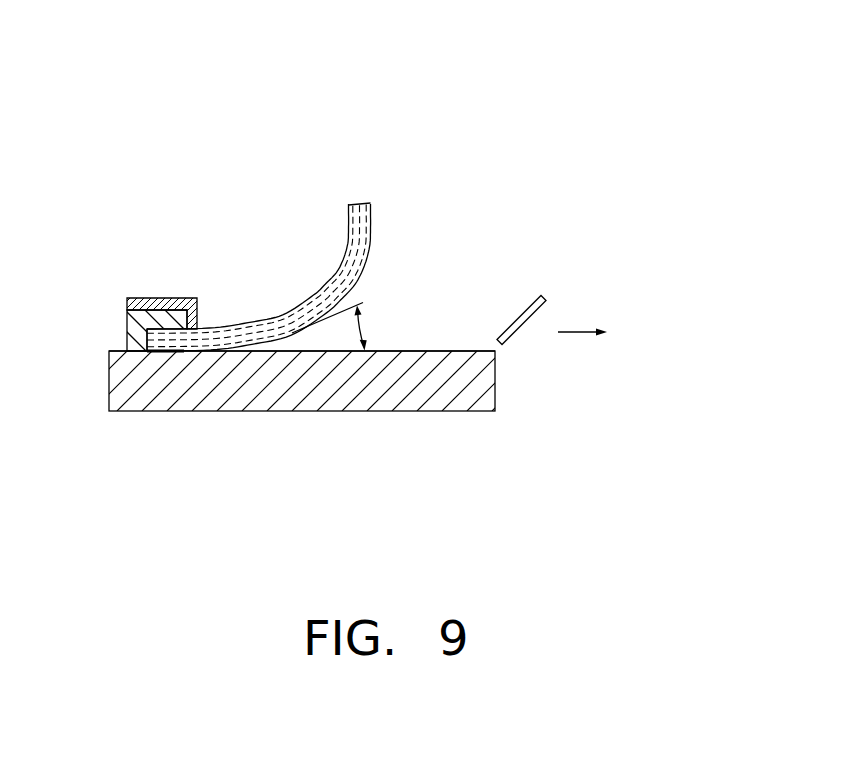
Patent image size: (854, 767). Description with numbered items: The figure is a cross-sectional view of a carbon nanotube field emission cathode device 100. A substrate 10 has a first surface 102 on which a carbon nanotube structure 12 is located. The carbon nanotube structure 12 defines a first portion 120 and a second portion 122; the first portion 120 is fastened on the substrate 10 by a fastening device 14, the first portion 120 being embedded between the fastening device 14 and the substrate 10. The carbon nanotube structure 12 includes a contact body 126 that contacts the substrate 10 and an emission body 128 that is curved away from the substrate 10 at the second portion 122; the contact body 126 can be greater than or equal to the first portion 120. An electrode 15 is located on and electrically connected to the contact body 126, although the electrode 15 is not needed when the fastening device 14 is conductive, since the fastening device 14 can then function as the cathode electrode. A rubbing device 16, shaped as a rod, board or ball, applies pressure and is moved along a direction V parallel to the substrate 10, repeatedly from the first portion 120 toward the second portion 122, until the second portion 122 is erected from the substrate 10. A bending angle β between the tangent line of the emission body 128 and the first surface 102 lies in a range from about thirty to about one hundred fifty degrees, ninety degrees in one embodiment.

The CNT field emission cathode device 100 is at (390, 52).
The substrate 10 is at (478, 391).
The first surface 102 is at (412, 343).
The carbon nanotube structure 12 is at (317, 283).
The first portion 120 is at (147, 344).
The second portion 122 is at (350, 204).
The contact body 126 is at (164, 353).
The emission body 128 is at (365, 266).
The fastening device 14 is at (140, 320).
The electrode 15 is at (150, 298).
The rubbing device 16 is at (542, 297).